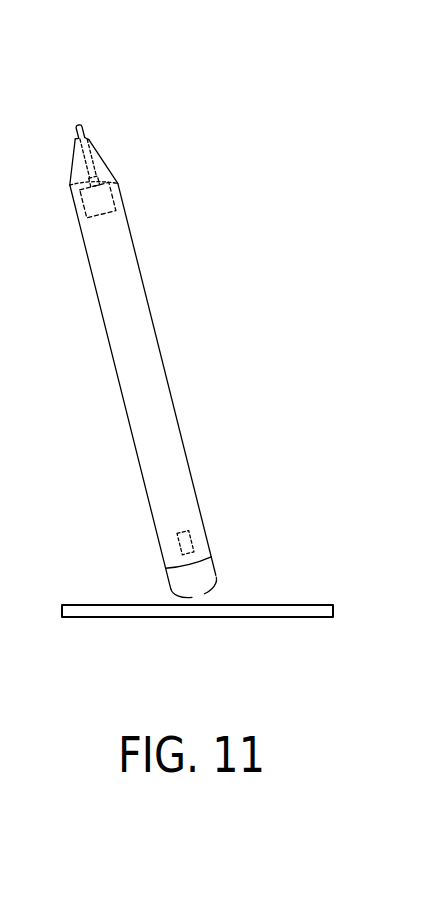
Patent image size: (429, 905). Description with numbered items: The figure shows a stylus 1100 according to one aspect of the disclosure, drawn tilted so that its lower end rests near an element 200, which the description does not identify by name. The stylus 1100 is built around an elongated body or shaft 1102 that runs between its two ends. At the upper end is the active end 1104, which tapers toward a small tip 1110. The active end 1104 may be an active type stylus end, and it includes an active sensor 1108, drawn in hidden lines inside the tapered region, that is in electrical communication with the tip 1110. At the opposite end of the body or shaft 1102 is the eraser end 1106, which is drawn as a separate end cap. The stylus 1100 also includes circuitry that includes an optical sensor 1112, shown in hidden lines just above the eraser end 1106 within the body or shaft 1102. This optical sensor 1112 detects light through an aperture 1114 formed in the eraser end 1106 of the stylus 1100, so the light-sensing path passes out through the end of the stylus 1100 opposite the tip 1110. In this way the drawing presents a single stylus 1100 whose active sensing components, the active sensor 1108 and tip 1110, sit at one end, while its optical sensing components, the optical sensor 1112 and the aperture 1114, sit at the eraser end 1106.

The stylus 1100 is at (182, 257).
The body or shaft 1102 is at (157, 349).
The active end 1104 is at (102, 168).
The eraser end 1106 is at (212, 580).
The active sensor 1108 is at (112, 198).
The tip 1110 is at (84, 129).
The optical sensor 1112 is at (189, 541).
The aperture 1114 is at (197, 595).
The touch surface 200 is at (305, 605).